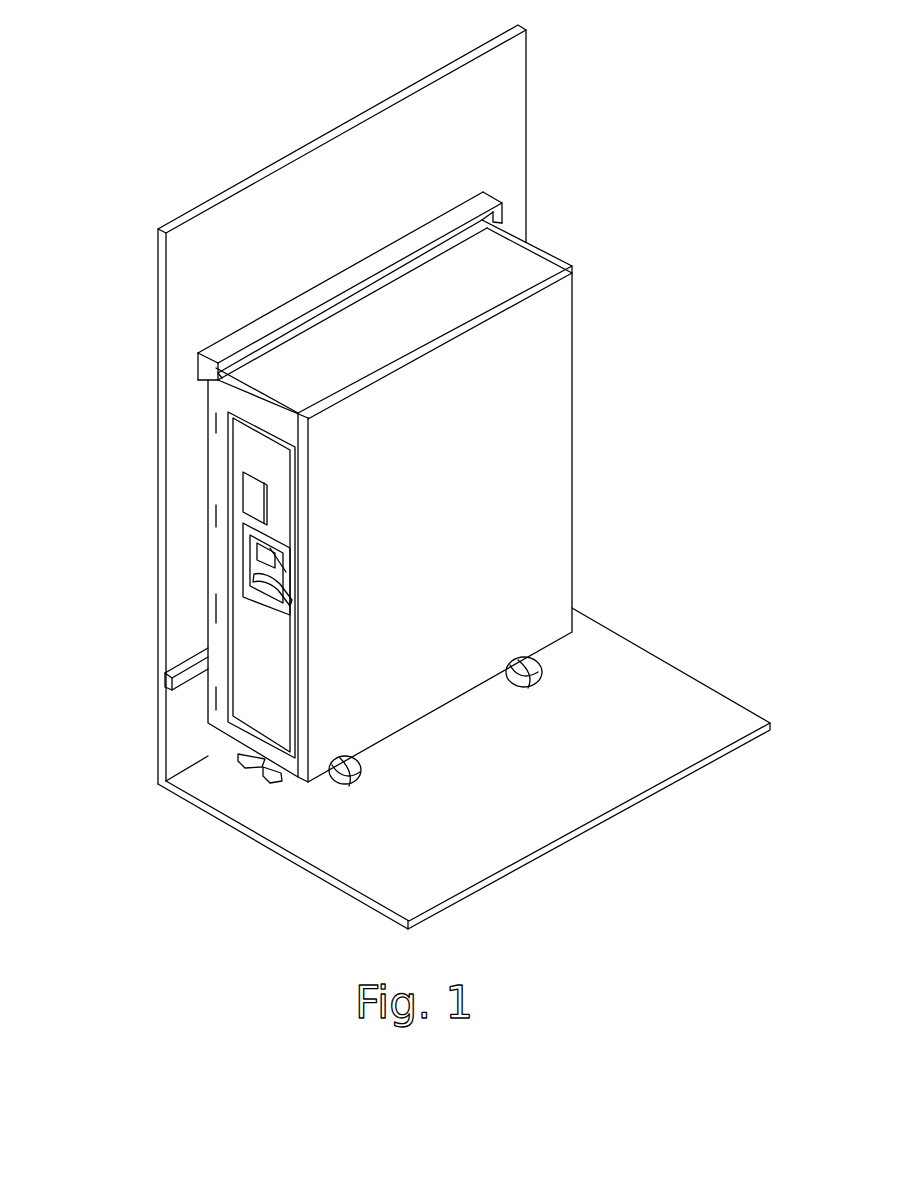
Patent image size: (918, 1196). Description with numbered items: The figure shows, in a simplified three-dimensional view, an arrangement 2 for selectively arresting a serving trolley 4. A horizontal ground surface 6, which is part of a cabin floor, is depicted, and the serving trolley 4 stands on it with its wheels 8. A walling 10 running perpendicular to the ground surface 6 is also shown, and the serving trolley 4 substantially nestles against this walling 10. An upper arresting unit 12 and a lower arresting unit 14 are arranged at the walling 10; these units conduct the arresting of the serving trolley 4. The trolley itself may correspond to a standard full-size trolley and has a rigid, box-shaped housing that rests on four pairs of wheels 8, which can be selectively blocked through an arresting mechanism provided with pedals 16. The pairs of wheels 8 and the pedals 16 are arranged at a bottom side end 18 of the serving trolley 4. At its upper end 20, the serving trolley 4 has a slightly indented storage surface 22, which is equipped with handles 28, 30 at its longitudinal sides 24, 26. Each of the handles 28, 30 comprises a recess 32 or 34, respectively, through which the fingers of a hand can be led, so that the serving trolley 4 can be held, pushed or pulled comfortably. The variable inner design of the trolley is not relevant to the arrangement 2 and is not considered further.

The arrangement 2 is at (558, 88).
The serving trolley 4 is at (540, 437).
The ground surface 6 is at (687, 702).
The wheels 8 is at (535, 677).
The walling 10 is at (513, 183).
The upper arresting unit 12 is at (372, 232).
The lower arresting unit 14 is at (153, 690).
The pedals 16 is at (266, 778).
The bottom side end 18 is at (593, 612).
The upper end 20 is at (590, 260).
The storage surface 22 is at (372, 331).
The longitudinal side 24 is at (207, 335).
The longitudinal side 26 is at (493, 217).
The handle 28 is at (280, 398).
The handle 30 is at (540, 260).
The recess 32 is at (247, 395).
The recess 34 is at (527, 233).